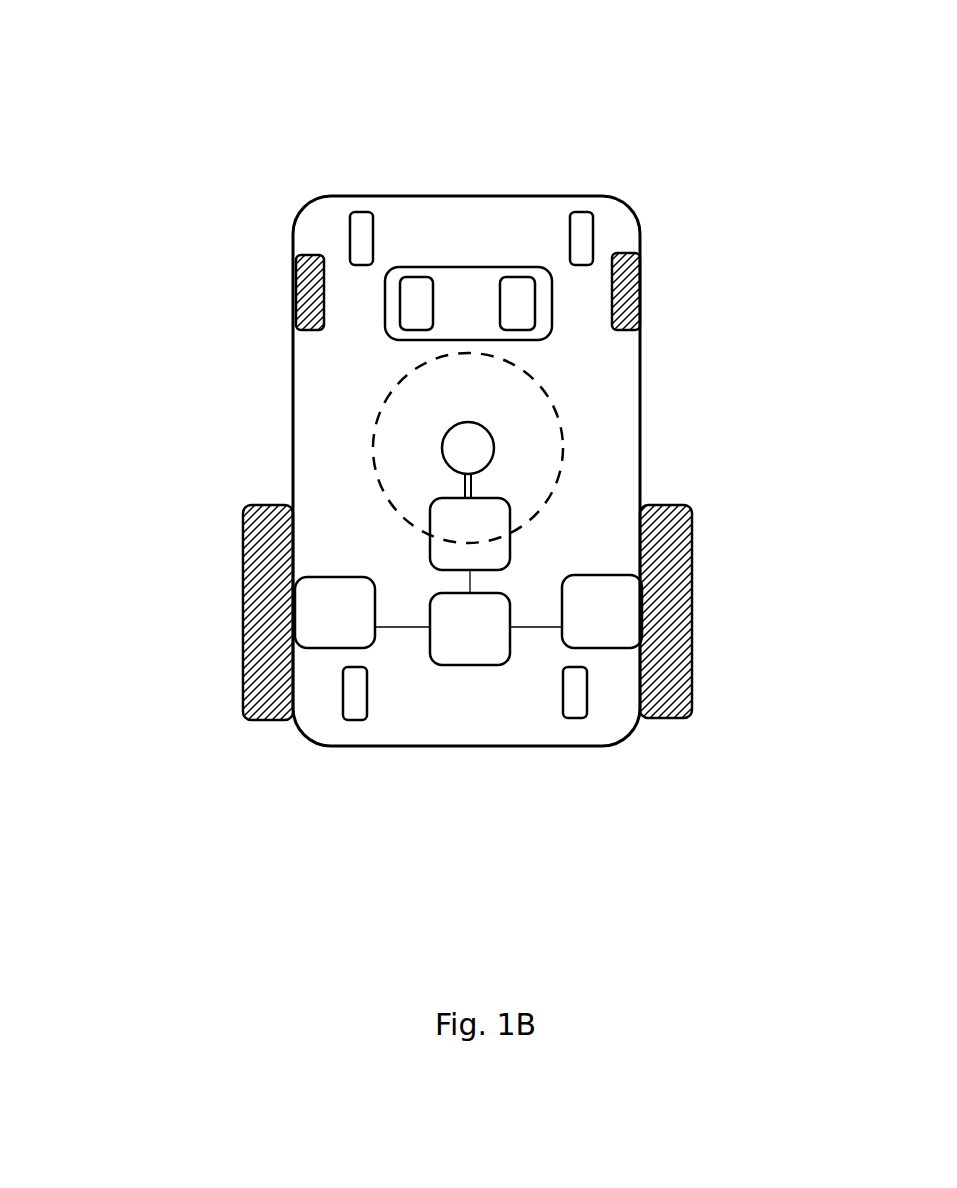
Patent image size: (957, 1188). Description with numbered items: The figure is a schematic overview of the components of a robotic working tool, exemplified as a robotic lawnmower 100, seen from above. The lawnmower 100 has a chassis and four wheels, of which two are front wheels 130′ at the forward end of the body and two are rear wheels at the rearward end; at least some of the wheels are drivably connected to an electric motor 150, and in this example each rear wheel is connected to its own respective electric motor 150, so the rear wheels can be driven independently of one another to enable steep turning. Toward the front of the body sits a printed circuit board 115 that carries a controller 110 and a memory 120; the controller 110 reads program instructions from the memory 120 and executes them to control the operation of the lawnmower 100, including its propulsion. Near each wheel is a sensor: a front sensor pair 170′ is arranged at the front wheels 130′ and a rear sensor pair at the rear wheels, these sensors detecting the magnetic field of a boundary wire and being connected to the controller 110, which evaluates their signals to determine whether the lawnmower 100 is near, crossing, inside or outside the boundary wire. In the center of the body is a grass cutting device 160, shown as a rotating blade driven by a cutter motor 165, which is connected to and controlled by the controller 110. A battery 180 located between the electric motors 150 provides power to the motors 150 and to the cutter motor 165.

The robotic lawnmower 100 is at (390, 196).
The controller 110 is at (520, 273).
The printed circuit board 115 is at (468, 263).
The memory 120 is at (405, 283).
The front wheels 130′ is at (294, 308).
The electric motor 150 is at (330, 618).
The grass cutting device 160 is at (567, 423).
The cutter motor 165 is at (423, 507).
The front sensor pair 170′ is at (353, 223).
The battery 180 is at (480, 643).